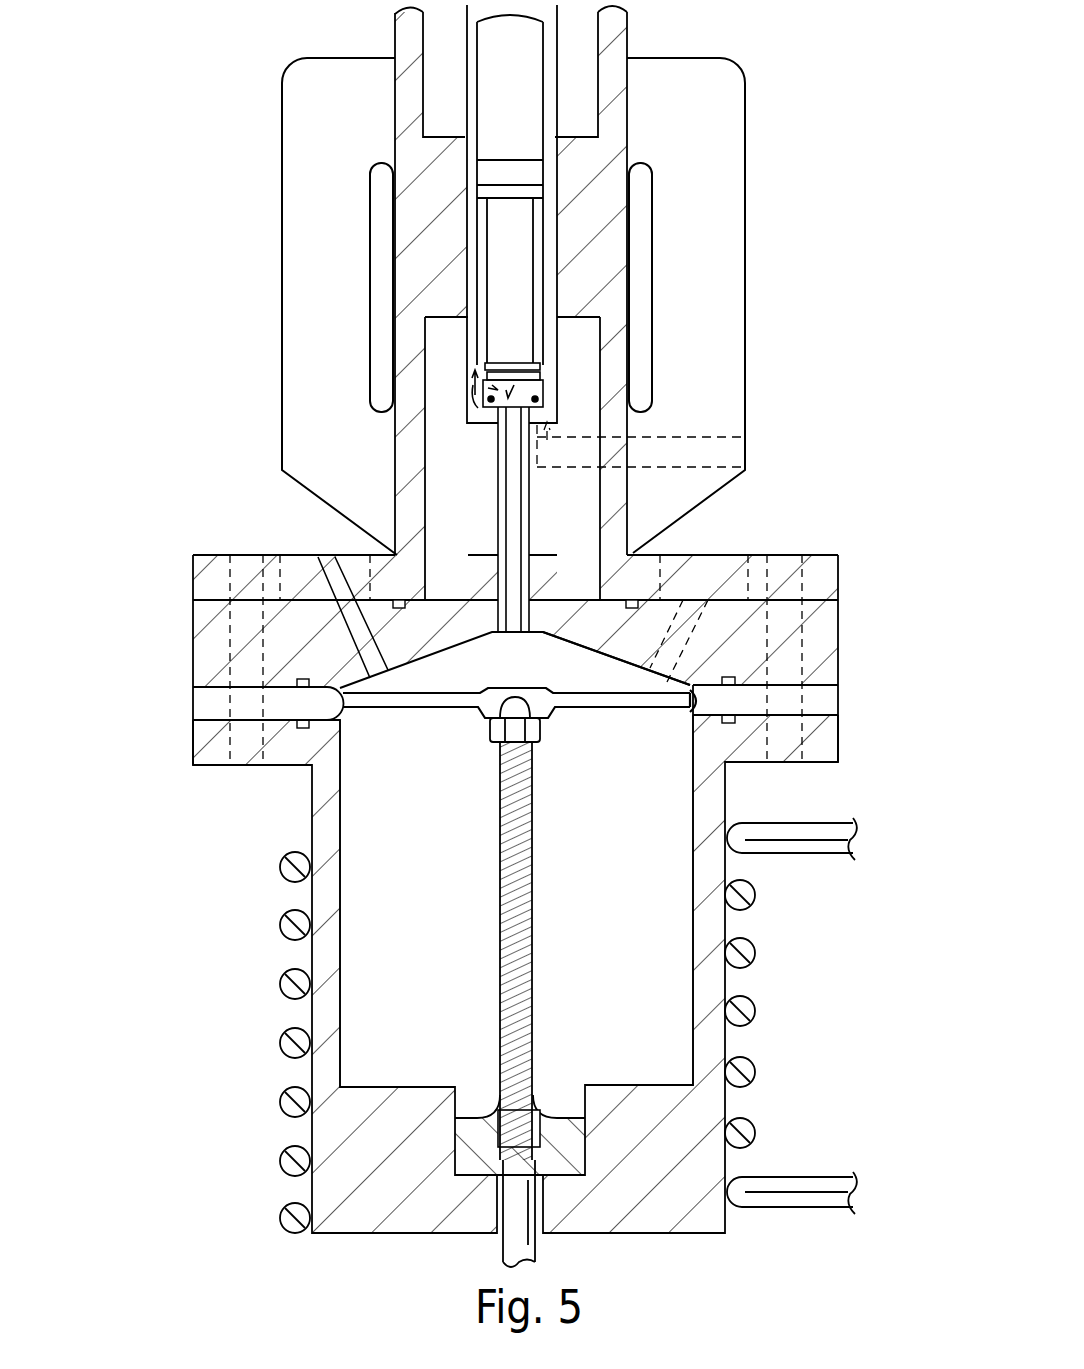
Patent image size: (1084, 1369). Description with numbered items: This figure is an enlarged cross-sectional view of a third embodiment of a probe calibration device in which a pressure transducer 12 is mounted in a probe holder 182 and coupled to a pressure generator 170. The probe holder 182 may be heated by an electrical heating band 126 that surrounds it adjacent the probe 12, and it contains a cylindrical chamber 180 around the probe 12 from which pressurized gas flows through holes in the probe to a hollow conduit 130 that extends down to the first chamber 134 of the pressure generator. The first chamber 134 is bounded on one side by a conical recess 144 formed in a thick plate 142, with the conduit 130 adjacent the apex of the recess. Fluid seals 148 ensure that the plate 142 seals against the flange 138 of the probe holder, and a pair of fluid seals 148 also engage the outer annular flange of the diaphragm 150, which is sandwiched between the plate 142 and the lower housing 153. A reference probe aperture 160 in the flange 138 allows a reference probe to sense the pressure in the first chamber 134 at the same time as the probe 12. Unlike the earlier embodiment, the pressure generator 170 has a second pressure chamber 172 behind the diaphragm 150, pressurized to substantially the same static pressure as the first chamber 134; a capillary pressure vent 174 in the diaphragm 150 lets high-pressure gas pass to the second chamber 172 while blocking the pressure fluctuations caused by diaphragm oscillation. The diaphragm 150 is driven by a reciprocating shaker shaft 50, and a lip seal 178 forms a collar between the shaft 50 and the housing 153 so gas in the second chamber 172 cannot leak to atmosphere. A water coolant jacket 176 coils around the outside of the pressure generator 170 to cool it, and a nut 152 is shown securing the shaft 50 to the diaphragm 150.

The pressure transducer 12 is at (522, 278).
The reciprocating shaft 50 is at (522, 975).
The electrical heating band 126 is at (648, 248).
The hollow conduit 130 is at (513, 540).
The first chamber 134 is at (530, 680).
The flange 138 is at (208, 585).
The thick plate 142 is at (208, 638).
The conical recess 144 is at (585, 648).
The fluid seals 148 is at (640, 600).
The diaphragm 150 is at (210, 705).
The nut 152 is at (480, 712).
The lower housing 153 is at (215, 765).
The reference probe aperture 160 is at (318, 557).
The pressure generator 170 is at (300, 897).
The second pressure chamber 172 is at (437, 950).
The capillary pressure vent 174 is at (683, 712).
The water coolant jacket 176 is at (773, 845).
The lip seal 178 is at (585, 1138).
The chamber 180 is at (552, 380).
The probe holder 182 is at (613, 397).